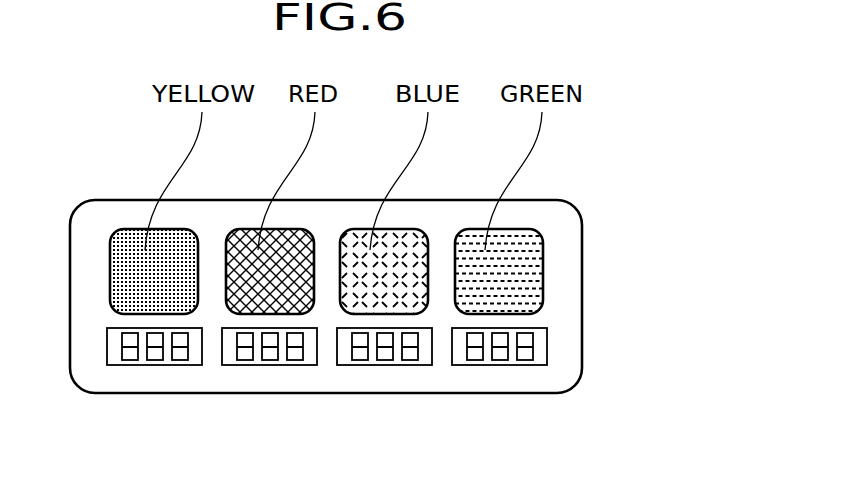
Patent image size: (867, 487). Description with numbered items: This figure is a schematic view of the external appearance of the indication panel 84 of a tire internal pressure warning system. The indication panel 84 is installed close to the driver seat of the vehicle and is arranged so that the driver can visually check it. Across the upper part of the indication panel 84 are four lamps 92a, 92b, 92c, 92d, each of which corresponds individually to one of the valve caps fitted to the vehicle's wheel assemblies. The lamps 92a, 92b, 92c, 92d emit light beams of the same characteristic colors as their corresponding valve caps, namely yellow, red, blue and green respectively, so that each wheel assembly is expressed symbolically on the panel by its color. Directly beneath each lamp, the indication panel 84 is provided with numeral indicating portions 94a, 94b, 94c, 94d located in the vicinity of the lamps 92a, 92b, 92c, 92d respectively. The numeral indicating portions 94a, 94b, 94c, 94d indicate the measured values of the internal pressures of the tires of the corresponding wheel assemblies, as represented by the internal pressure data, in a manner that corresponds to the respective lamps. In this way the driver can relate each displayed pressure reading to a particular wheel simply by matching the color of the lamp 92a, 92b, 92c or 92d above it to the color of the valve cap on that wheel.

The indication panel 84 is at (609, 277).
The lamp 92a is at (182, 218).
The lamp 92b is at (297, 218).
The lamp 92c is at (410, 218).
The lamp 92d is at (525, 218).
The numeral indicating portion 94a is at (160, 370).
The numeral indicating portion 94b is at (277, 370).
The numeral indicating portion 94c is at (393, 370).
The numeral indicating portion 94d is at (510, 370).